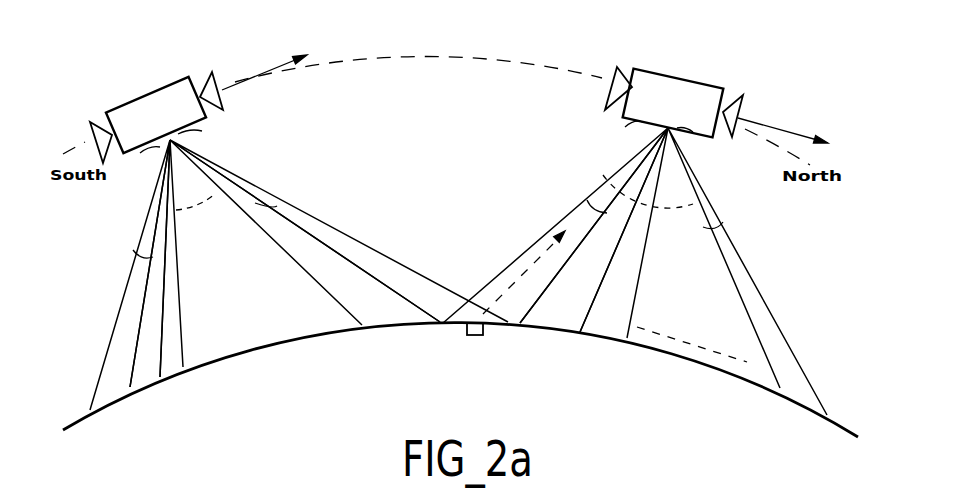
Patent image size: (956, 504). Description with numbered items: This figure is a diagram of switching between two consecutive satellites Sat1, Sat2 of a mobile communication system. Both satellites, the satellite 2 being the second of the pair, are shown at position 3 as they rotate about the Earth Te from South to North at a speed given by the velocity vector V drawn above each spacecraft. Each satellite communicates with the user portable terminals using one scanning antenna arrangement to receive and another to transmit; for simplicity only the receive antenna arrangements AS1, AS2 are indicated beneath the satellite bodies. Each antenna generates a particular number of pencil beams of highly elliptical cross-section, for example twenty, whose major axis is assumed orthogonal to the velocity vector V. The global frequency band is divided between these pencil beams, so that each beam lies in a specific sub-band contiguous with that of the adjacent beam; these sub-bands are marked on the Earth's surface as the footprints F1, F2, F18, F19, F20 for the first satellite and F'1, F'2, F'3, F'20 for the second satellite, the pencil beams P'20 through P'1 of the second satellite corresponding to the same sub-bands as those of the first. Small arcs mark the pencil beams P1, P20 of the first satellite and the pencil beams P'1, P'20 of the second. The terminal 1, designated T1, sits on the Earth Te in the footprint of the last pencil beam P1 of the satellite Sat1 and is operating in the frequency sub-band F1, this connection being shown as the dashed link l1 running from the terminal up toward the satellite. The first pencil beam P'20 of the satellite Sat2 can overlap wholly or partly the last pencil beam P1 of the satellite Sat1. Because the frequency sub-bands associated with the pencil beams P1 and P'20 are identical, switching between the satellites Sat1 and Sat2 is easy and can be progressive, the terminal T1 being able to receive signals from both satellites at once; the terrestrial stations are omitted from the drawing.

The terminal 1 is at (475, 335).
The terminal T1 is at (469, 367).
The Earth Te is at (112, 400).
The satellite 2 is at (156, 117).
The satellite Sat2 is at (187, 77).
The satellite Sat1 is at (720, 90).
The position 3 is at (434, 103).
The receive antenna arrangement AS1 is at (700, 147).
The receive antenna arrangement AS2 is at (207, 132).
The velocity vector V is at (277, 63).
The frequency sub-band F1 is at (339, 231).
The frequency sub-band F2 is at (305, 232).
The frequency sub-band F18 is at (172, 258).
The frequency sub-band F19 is at (150, 263).
The frequency sub-band F20 is at (130, 275).
The frequency sub-band F'1 is at (555, 225).
The frequency sub-band F'2 is at (594, 230).
The frequency sub-band F'3 is at (624, 233).
The frequency sub-band F'20 is at (747, 271).
The pencil beam P1 is at (723, 222).
The pencil beam P20 is at (587, 200).
The pencil beam P'1 is at (291, 192).
The pencil beam P'20 is at (108, 269).
The link l1 is at (520, 278).